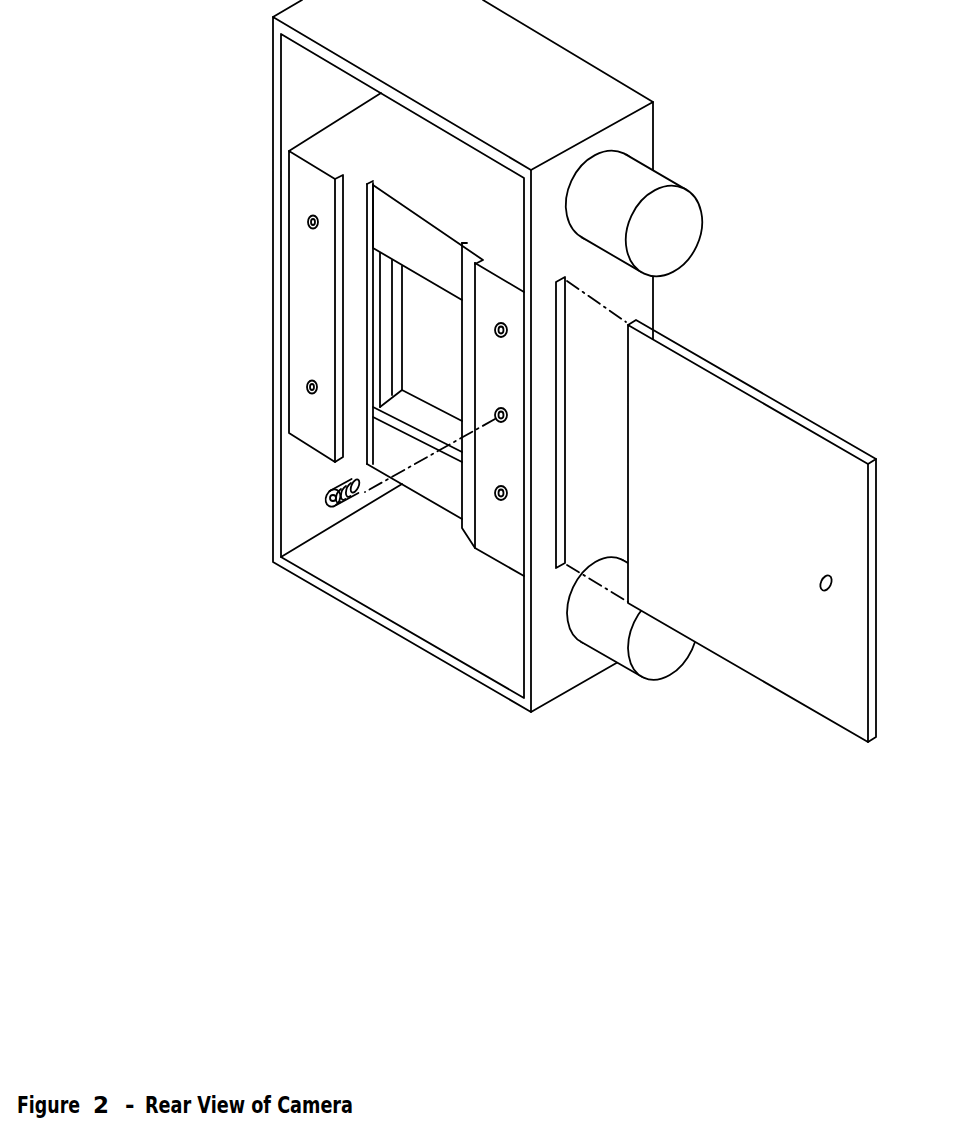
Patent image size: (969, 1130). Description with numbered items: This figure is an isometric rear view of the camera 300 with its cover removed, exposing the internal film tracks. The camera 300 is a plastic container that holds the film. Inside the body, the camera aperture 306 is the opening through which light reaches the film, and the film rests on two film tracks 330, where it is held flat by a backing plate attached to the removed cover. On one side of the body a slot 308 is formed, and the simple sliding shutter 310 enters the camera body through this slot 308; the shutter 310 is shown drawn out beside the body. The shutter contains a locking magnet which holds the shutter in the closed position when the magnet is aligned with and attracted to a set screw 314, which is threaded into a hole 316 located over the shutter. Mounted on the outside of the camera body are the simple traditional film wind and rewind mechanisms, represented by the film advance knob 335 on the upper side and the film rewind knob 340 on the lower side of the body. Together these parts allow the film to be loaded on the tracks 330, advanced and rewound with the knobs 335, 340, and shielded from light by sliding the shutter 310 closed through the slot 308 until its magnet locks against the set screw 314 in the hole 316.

The camera body 300 is at (463, 356).
The camera aperture 306 is at (400, 313).
The camera shutter slot 308 is at (565, 424).
The camera shutter 310 is at (752, 531).
The camera shutter locking magnet set screw 314 is at (320, 500).
The camera shutter locking magnet set screw hole 316 is at (503, 422).
The film tracks 330 is at (473, 257).
The film advance knob 335 is at (670, 226).
The film rewind knob 340 is at (660, 661).